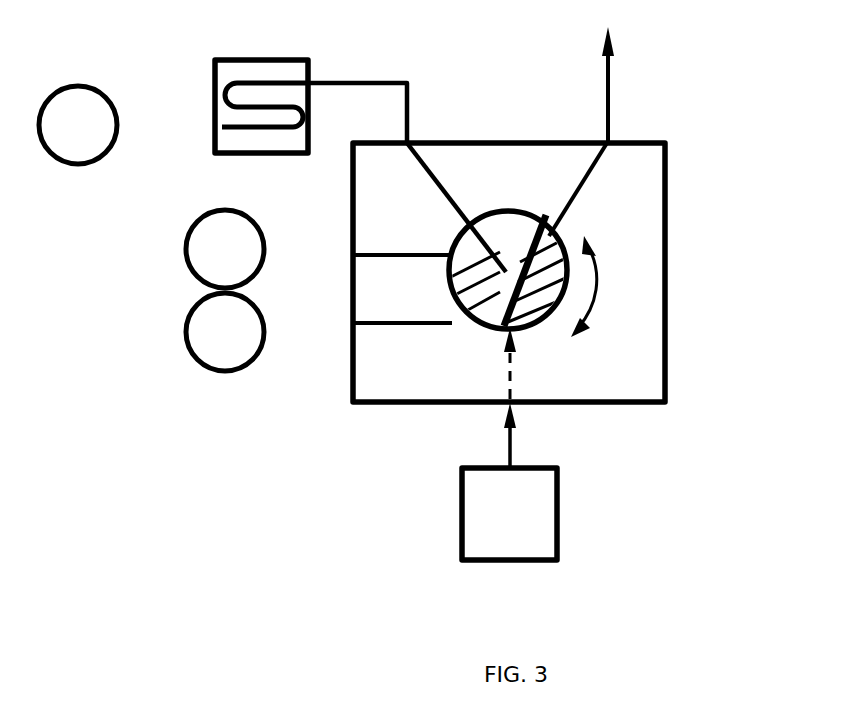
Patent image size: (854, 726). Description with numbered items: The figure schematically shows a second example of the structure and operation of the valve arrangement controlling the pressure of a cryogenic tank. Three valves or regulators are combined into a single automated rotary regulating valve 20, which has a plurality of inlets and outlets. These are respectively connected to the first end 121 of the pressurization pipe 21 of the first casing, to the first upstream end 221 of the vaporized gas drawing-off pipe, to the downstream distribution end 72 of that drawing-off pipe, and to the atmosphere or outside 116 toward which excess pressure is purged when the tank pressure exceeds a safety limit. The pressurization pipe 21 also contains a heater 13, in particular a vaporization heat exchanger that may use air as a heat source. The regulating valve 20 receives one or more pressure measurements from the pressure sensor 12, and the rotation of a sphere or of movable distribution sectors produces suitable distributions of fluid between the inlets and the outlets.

The automated rotary regulating valve 20 is at (668, 322).
The outside 116 is at (617, 128).
The pressurization pipe 21 is at (390, 82).
The heater 13 is at (215, 153).
The first upstream end of the drawing-off pipe 221 is at (215, 125).
The downstream distribution end 72 is at (347, 255).
The first end of the pressurization pipe 121 is at (337, 323).
The pressure sensor 12 is at (490, 530).